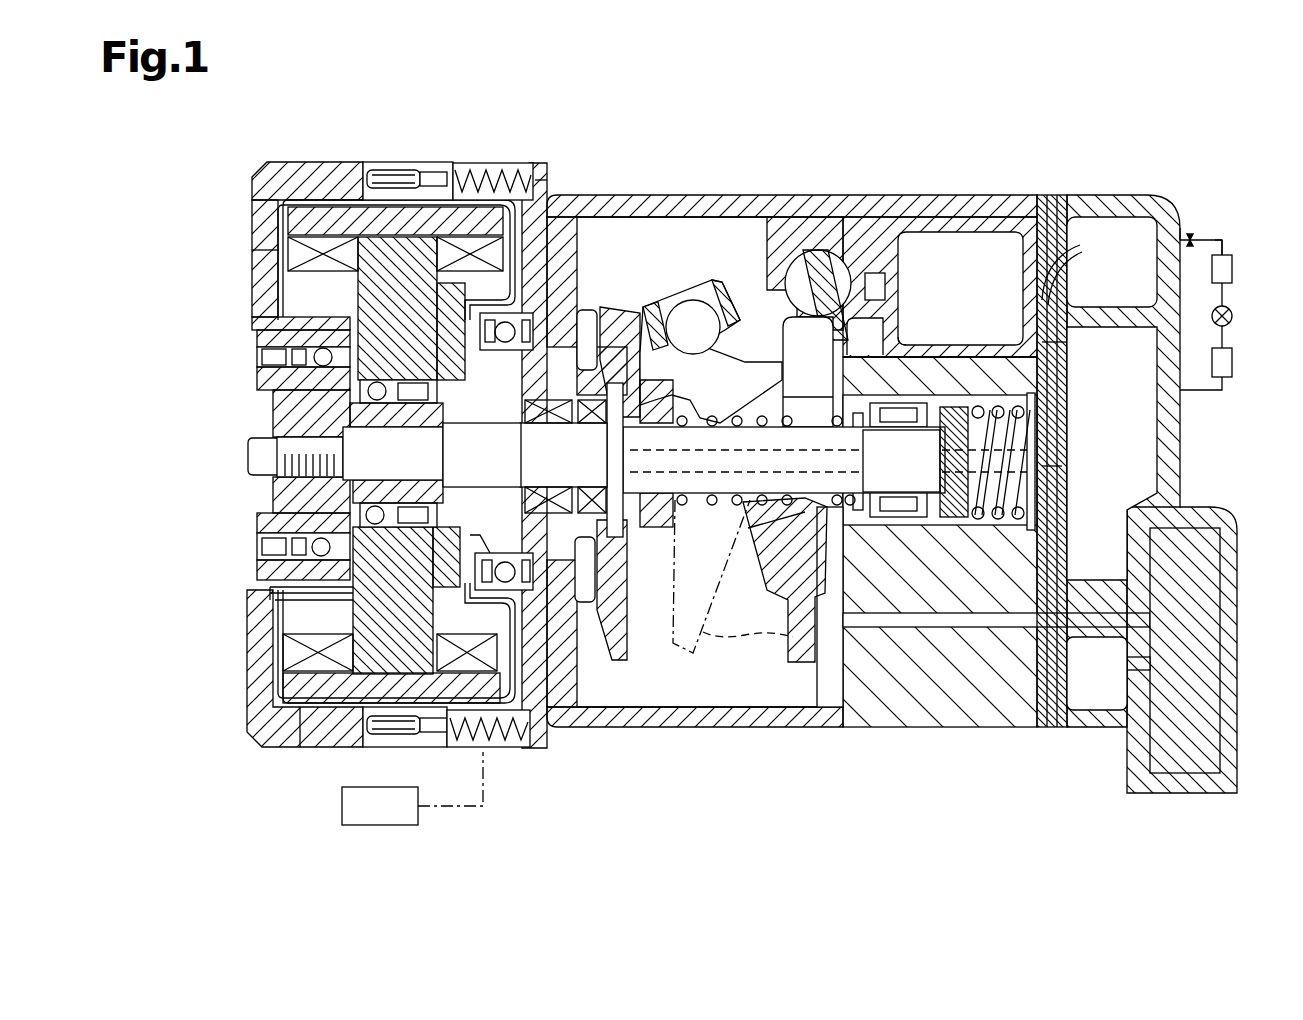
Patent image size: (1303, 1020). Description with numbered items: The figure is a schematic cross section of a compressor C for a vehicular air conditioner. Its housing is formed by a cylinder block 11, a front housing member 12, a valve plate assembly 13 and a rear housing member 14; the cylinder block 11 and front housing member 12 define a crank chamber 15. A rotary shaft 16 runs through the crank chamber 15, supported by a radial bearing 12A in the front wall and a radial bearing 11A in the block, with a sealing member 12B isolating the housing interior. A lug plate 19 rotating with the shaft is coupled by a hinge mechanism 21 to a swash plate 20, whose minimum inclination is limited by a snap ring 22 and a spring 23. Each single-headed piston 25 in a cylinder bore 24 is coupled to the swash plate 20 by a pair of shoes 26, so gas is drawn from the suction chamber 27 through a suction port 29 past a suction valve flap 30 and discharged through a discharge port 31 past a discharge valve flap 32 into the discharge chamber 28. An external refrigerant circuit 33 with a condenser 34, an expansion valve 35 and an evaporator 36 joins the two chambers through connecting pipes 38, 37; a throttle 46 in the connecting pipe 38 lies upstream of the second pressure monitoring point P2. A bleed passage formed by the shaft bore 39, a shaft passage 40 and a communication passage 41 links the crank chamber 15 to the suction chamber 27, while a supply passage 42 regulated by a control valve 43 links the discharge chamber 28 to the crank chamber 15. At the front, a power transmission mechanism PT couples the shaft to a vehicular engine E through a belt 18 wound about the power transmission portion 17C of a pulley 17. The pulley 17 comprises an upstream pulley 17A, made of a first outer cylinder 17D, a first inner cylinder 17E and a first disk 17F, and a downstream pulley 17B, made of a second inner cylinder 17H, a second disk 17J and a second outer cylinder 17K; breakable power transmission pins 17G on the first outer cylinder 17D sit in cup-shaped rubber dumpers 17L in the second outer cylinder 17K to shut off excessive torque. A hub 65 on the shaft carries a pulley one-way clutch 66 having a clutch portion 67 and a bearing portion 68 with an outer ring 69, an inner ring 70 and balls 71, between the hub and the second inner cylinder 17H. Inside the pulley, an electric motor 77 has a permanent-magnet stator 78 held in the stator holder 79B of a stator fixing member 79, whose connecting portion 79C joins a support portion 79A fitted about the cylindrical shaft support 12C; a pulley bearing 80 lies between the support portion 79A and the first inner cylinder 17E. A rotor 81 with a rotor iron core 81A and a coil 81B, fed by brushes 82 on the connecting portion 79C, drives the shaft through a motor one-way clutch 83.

The power transmission mechanism PT is at (239, 158).
The pulley 17 is at (252, 216).
The upstream pulley 17A is at (540, 180).
The downstream pulley 17B is at (292, 162).
The power transmission portion 17C is at (520, 185).
The first outer cylinder 17D is at (560, 208).
The first inner cylinder 17E is at (580, 310).
The first disk 17F is at (578, 247).
The power transmission pins 17G is at (460, 178).
The second inner cylinder 17H is at (282, 320).
The second disk 17J is at (254, 262).
The second outer cylinder 17K is at (348, 163).
The rubber dumpers 17L is at (402, 172).
The cylinder block 11 is at (916, 196).
The radial bearing 11A is at (900, 394).
The front housing member 12 is at (726, 196).
The radial bearing 12A is at (590, 427).
The sealing member 12B is at (540, 427).
The cylindrical shaft support 12C is at (482, 455).
The valve plate assembly 13 is at (1050, 195).
The rear housing member 14 is at (1135, 202).
The crank chamber 15 is at (733, 692).
The rotary shaft 16 is at (726, 497).
The belt 18 is at (510, 748).
The lug plate 19 is at (612, 330).
The swash plate 20 is at (735, 642).
The hinge mechanism 21 is at (686, 279).
The snap ring 22 is at (865, 452).
The spring 23 is at (838, 483).
The cylinder bores 24 is at (946, 217).
The single-headed piston 25 is at (855, 217).
The shoes 26 is at (790, 215).
The suction chamber 27 is at (1117, 499).
The discharge chamber 28 is at (1150, 288).
The suction port 29 is at (1068, 343).
The suction valve flap 30 is at (1020, 340).
The discharge port 31 is at (1023, 262).
The discharge valve flap 32 is at (1072, 250).
The external refrigerant circuit 33 is at (1239, 172).
The condenser 34 is at (1233, 270).
The expansion valve 35 is at (1233, 318).
The evaporator 36 is at (1233, 362).
The connecting pipe 37 is at (1196, 392).
The connecting pipe 38 is at (1224, 243).
The shaft bore 39 is at (995, 520).
The shaft passage 40 is at (745, 452).
The communication passage 41 is at (1063, 466).
The supply passage 42 is at (935, 627).
The control valve 43 is at (1200, 510).
The throttle 46 is at (1190, 232).
The hub 65 is at (262, 480).
The pulley one-way clutch 66 is at (262, 357).
The clutch portion 67 is at (262, 383).
The bearing portion 68 is at (318, 348).
The outer ring 69 is at (258, 334).
The inner ring 70 is at (268, 408).
The balls 71 is at (375, 380).
The electric motor 77 is at (290, 660).
The stator 78 is at (285, 685).
The stator fixing member 79 is at (258, 714).
The support portion 79A is at (490, 540).
The stator holder 79B is at (310, 730).
The connecting portion 79C is at (565, 680).
The pulley bearing 80 is at (512, 553).
The rotor 81 is at (352, 620).
The rotor iron core 81A is at (270, 590).
The coil 81B is at (270, 600).
The brushes 82 is at (437, 620).
The motor one-way clutch 83 is at (393, 480).
The compressor C is at (1172, 173).
The vehicular engine E is at (342, 805).
The second pressure monitoring point P2 is at (1218, 240).